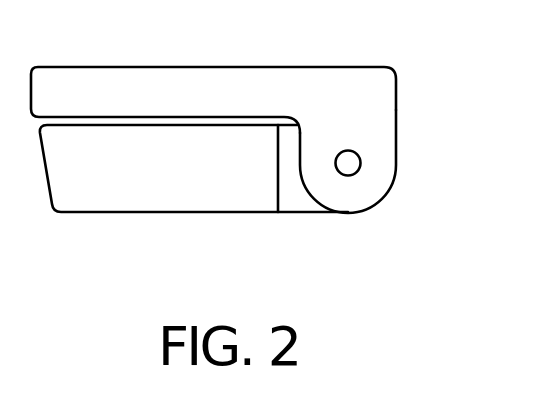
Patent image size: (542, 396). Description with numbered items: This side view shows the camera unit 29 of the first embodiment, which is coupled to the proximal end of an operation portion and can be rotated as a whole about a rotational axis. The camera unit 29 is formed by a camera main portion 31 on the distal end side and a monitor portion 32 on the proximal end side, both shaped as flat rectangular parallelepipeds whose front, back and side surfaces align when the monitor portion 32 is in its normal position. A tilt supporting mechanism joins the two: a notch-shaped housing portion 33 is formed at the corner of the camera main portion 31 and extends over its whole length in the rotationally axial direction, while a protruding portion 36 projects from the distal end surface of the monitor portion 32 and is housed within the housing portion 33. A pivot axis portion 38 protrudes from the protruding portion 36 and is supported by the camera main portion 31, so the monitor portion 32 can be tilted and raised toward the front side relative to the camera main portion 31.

The camera unit 29 is at (260, 135).
The camera main portion 31 is at (112, 203).
The monitor portion 32 is at (86, 66).
The housing portion 33 is at (295, 203).
The protruding portion 36 is at (367, 190).
The pivot axis portion 38 is at (349, 163).